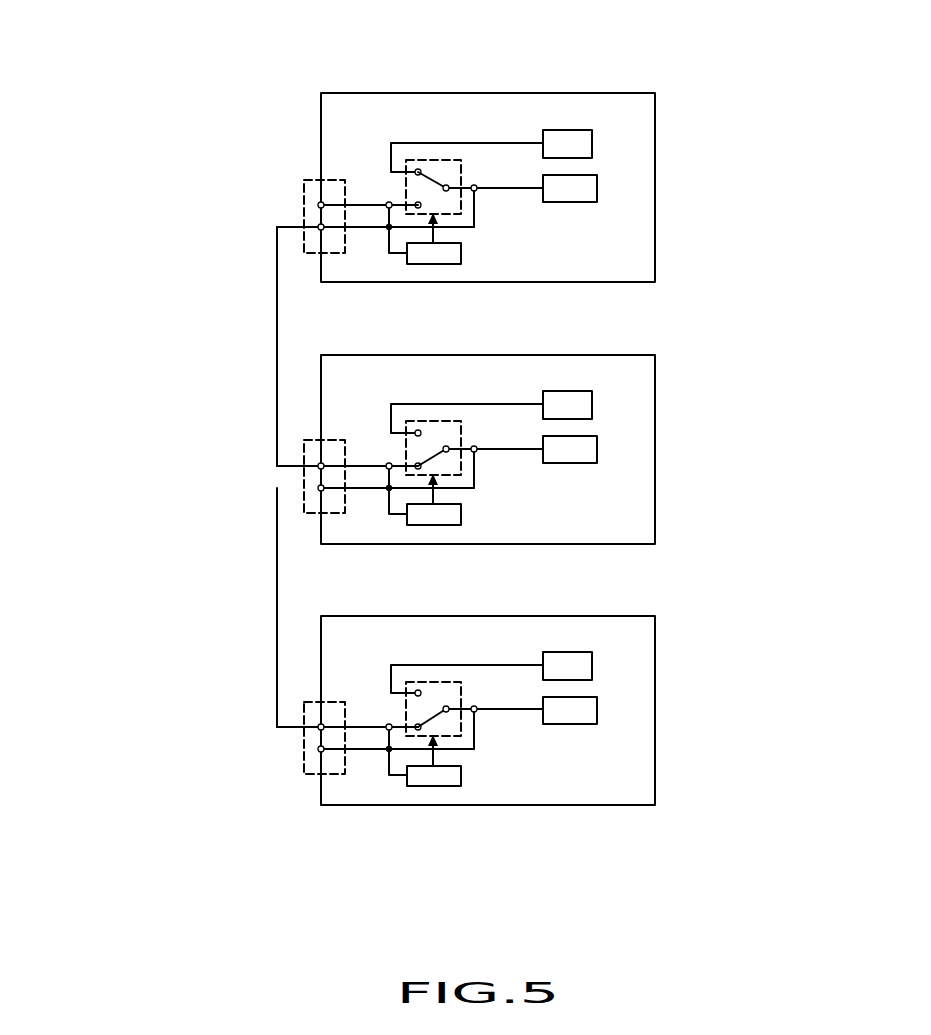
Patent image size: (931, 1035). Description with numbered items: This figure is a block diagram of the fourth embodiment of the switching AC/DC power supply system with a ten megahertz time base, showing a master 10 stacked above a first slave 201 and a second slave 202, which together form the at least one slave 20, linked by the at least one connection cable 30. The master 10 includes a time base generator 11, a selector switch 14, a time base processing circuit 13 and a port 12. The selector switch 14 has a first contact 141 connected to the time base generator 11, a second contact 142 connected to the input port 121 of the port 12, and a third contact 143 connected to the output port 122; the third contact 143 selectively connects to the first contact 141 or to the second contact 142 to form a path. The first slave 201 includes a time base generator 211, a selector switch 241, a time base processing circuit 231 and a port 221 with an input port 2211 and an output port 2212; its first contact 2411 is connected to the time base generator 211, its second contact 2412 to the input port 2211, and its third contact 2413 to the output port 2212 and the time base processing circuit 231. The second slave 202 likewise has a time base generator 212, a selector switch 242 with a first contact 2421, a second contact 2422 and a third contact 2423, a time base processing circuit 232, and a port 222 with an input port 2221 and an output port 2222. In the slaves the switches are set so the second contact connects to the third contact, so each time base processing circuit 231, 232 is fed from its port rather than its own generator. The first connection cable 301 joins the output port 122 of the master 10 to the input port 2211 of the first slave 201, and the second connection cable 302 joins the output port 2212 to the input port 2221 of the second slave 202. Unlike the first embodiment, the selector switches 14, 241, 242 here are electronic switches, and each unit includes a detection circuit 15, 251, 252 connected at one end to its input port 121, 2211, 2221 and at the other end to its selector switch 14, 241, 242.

The master 10 is at (672, 187).
The time base generator 11 is at (572, 137).
The port 12 is at (340, 180).
The input port 121 is at (318, 204).
The output port 122 is at (318, 227).
The time base processing circuit 13 is at (587, 180).
The selector switch 14 is at (455, 160).
The first contact 141 is at (418, 172).
The second contact 142 is at (418, 205).
The third contact 143 is at (446, 188).
The detection circuit 15 is at (405, 258).
The slave 20 is at (672, 447).
The first slave 201 is at (635, 518).
The second slave 202 is at (635, 779).
The time base generator 211 is at (587, 401).
The time base generator 212 is at (587, 662).
The port 221 is at (304, 446).
The input port 2211 is at (320, 467).
The output port 2212 is at (320, 489).
The port 222 is at (304, 706).
The input port 2221 is at (320, 728).
The output port 2222 is at (320, 750).
The time base processing circuit 231 is at (577, 460).
The time base processing circuit 232 is at (577, 721).
The selector switch 241 is at (455, 421).
The first contact 2411 is at (418, 433).
The second contact 2412 is at (418, 466).
The third contact 2413 is at (446, 449).
The selector switch 242 is at (455, 682).
The first contact 2421 is at (418, 693).
The second contact 2422 is at (418, 727).
The third contact 2423 is at (446, 709).
The detection circuit 251 is at (405, 519).
The detection circuit 252 is at (424, 786).
The connection cable 30 is at (262, 408).
The first connection cable 301 is at (277, 345).
The second connection cable 302 is at (277, 607).